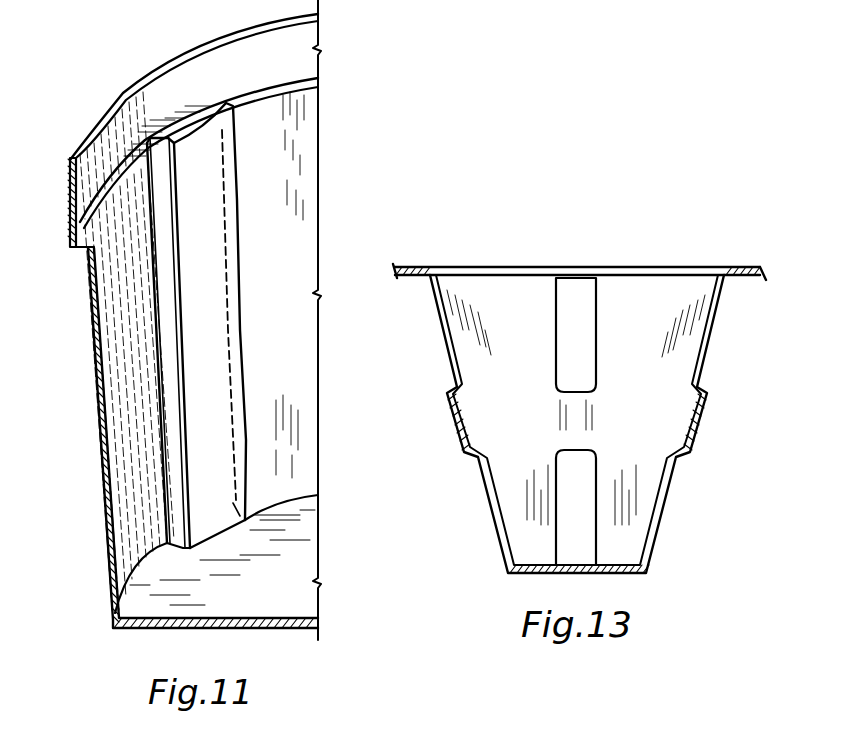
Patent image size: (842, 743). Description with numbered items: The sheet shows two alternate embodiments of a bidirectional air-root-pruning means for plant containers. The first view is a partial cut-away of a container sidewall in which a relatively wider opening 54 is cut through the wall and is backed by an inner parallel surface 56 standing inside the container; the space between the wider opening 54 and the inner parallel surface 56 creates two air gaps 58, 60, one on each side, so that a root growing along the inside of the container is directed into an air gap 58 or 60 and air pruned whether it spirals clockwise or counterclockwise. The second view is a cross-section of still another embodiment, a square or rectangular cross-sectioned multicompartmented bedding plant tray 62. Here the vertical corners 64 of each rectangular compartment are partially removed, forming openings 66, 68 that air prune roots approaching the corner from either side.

In FIG. 11, the wider opening 54 is at (203, 145).
In FIG. 11, the inner parallel surface 56 is at (225, 141).
In FIG. 11, the air gap 58 is at (243, 366).
In FIG. 11, the air gap 60 is at (175, 400).
In FIG. 13, the multicompartmented bedding plant tray 62 is at (760, 268).
In FIG. 13, the vertical corners 64 is at (575, 268).
In FIG. 13, the opening 66 is at (588, 525).
In FIG. 13, the opening 68 is at (586, 359).